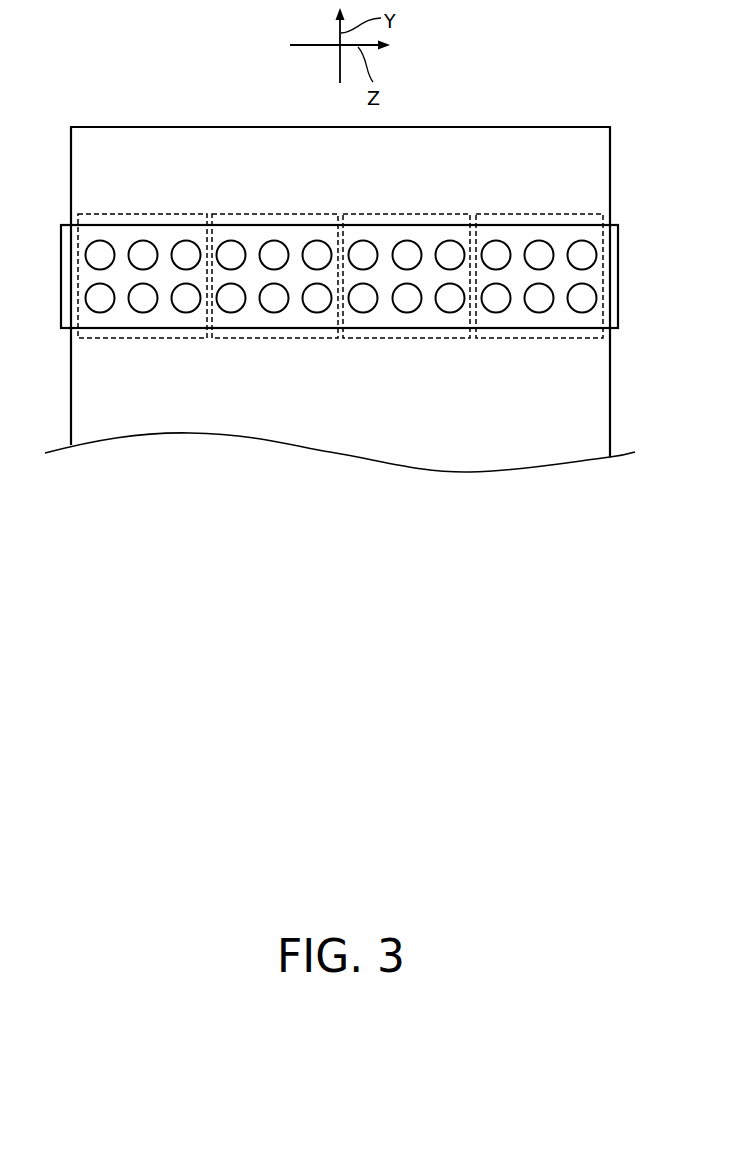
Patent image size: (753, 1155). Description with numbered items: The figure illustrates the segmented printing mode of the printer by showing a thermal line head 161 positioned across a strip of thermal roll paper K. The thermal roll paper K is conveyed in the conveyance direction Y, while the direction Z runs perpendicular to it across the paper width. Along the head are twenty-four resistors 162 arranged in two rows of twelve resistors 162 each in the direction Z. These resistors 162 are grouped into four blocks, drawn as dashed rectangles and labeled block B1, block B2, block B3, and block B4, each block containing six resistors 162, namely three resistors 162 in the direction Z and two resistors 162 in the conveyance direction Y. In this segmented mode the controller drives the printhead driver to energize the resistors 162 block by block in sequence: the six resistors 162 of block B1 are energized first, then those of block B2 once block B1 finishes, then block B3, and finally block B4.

The thermal line head 161 is at (619, 276).
The resistors 162 is at (100, 313).
The thermal roll paper K is at (612, 165).
The block B1 is at (138, 212).
The block B2 is at (262, 212).
The block B3 is at (386, 213).
The block B4 is at (512, 213).